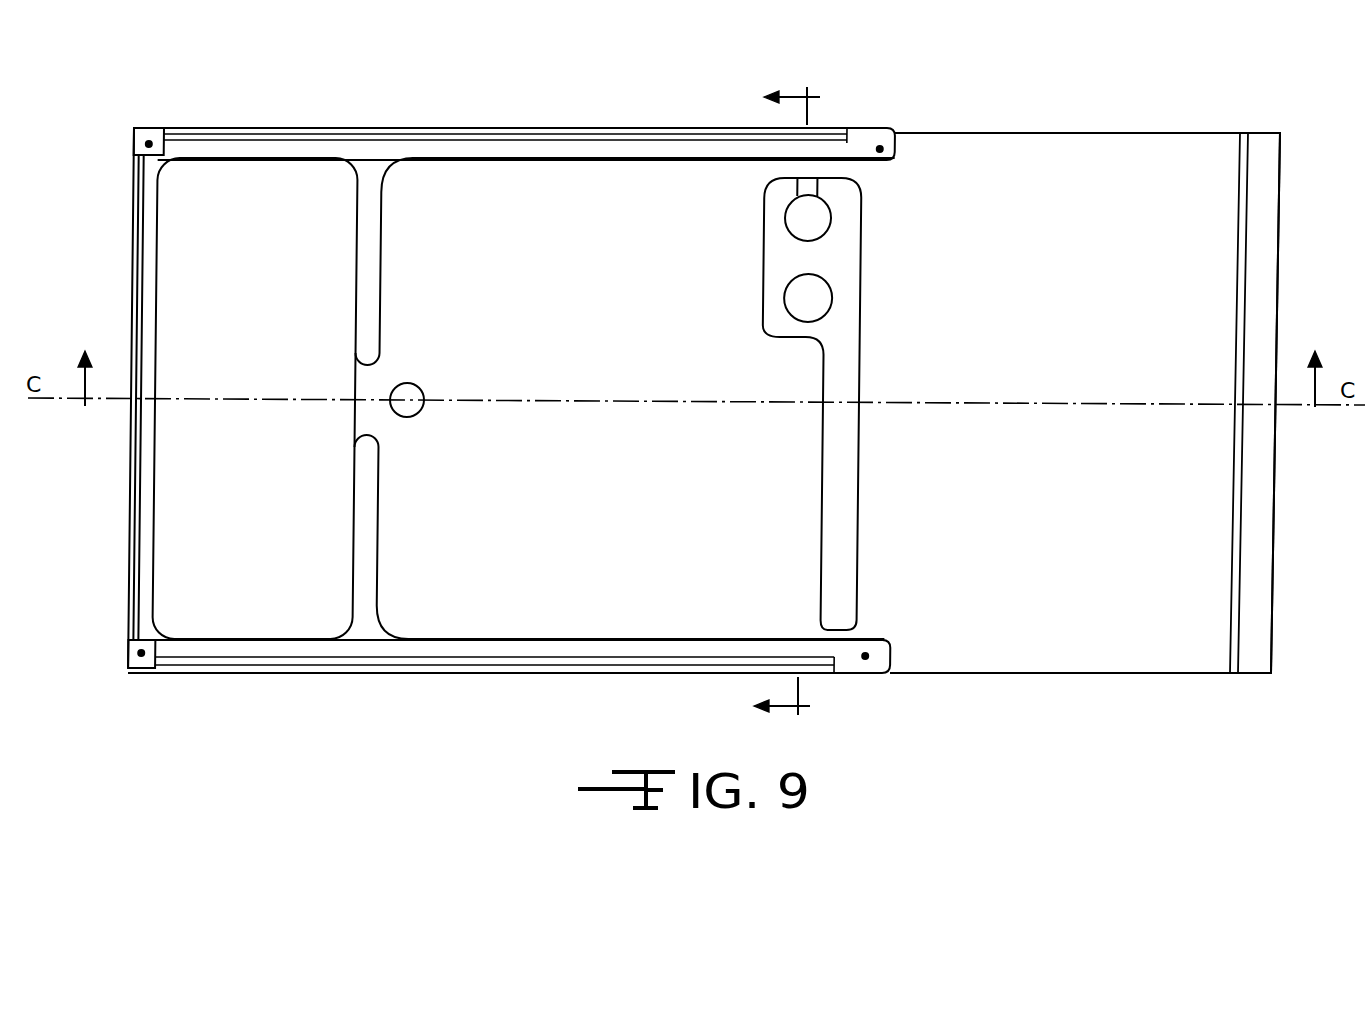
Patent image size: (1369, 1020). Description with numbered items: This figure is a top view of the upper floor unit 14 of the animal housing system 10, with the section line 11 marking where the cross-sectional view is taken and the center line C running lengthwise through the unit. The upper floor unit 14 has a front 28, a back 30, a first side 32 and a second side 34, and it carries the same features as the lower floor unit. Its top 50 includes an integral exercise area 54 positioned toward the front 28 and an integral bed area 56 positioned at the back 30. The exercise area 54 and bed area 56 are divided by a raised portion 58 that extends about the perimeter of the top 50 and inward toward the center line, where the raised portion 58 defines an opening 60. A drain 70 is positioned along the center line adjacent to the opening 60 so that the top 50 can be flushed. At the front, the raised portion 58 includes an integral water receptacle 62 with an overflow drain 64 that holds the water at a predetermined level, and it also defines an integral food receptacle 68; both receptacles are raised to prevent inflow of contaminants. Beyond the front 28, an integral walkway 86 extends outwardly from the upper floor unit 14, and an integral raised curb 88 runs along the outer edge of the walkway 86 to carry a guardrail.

The system 10 is at (700, 396).
The section line 11- 11 is at (798, 403).
The upper floor unit 14 is at (462, 674).
The front 28 is at (900, 137).
The back 30 is at (131, 161).
The first side 32 is at (462, 128).
The second side 34 is at (257, 670).
The top 50 is at (606, 255).
The exercise area 54 is at (562, 175).
The bed area 56 is at (272, 182).
The raised portion 58 is at (378, 280).
The opening 60 is at (372, 415).
The water receptacle 62 is at (818, 212).
The overflow drain 64 is at (806, 180).
The food receptacle 68 is at (820, 298).
The drain 70 is at (407, 383).
The walkway 86 is at (1048, 148).
The raised curb 88 is at (1268, 207).